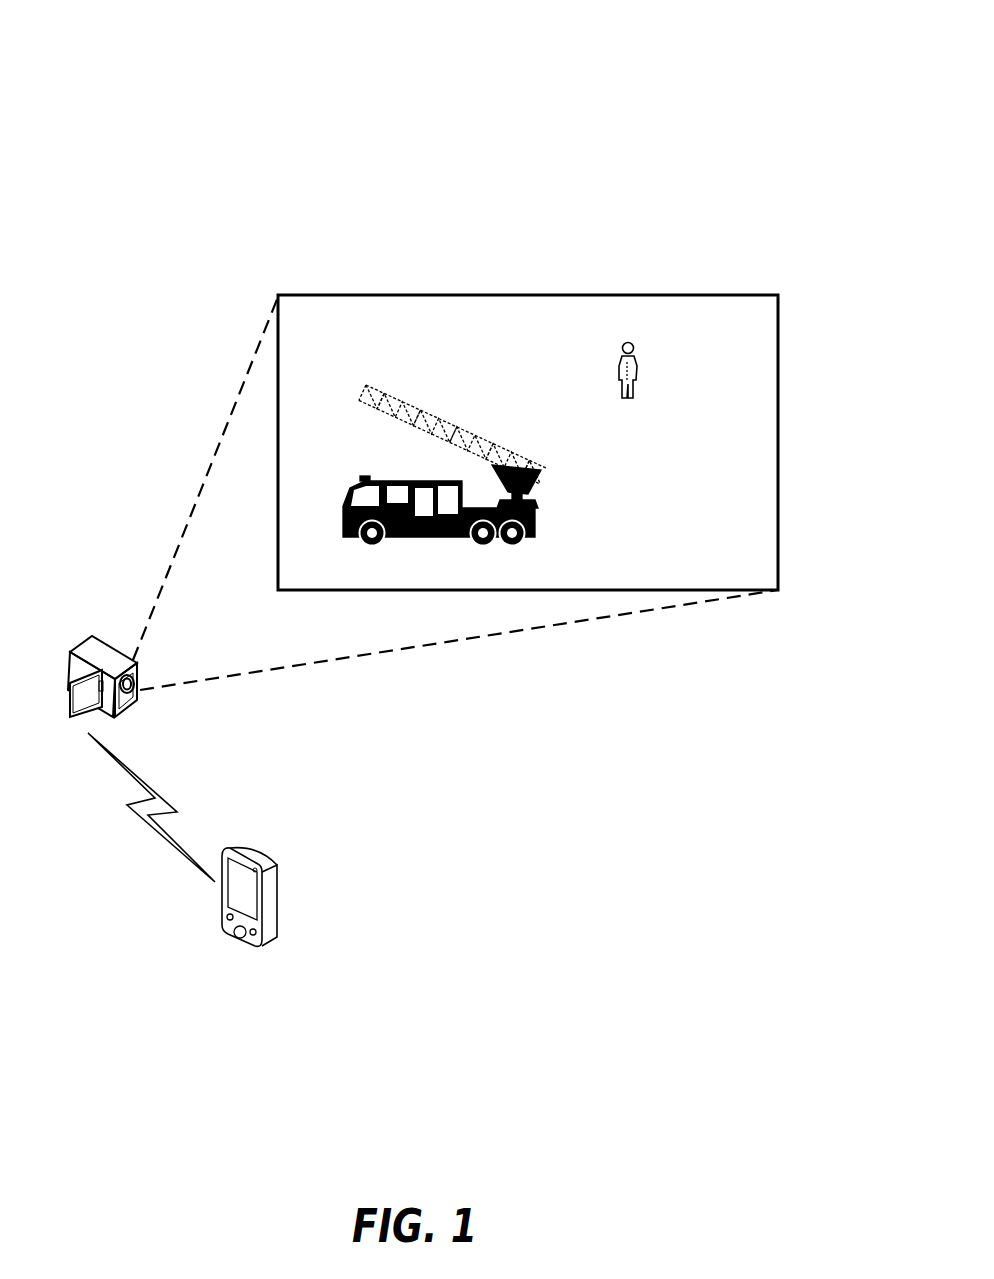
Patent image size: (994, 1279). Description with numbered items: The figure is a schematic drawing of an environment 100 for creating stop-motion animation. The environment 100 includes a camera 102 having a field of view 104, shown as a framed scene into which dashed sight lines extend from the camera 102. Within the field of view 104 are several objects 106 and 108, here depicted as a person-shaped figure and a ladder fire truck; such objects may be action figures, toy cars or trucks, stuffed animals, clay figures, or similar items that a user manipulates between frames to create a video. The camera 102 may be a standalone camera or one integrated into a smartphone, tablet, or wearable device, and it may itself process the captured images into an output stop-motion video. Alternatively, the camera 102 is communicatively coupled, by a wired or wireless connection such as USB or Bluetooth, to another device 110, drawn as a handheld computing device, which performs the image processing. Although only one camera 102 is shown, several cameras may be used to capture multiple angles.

The environment 100 is at (592, 48).
The camera 102 is at (137, 698).
The field of view 104 is at (712, 294).
The object 106 is at (636, 361).
The object 108 is at (536, 518).
The device 110 is at (277, 877).